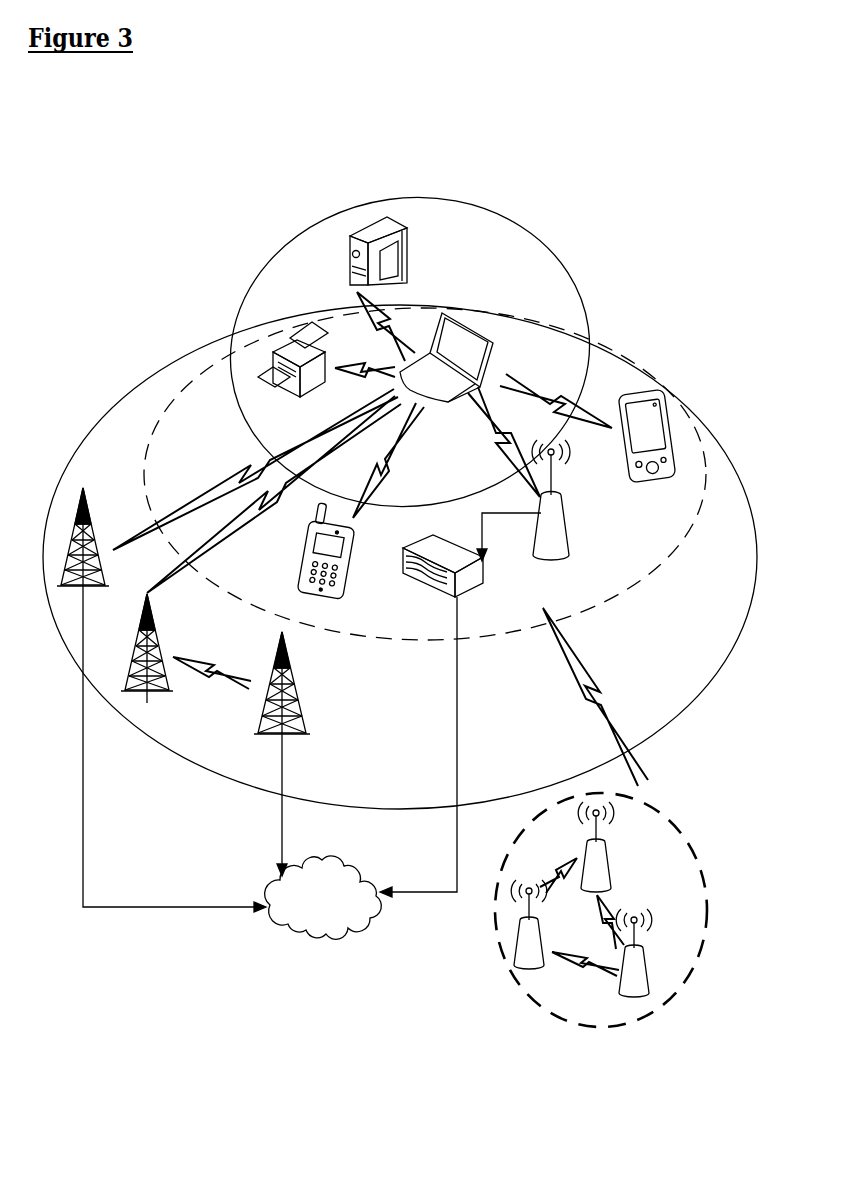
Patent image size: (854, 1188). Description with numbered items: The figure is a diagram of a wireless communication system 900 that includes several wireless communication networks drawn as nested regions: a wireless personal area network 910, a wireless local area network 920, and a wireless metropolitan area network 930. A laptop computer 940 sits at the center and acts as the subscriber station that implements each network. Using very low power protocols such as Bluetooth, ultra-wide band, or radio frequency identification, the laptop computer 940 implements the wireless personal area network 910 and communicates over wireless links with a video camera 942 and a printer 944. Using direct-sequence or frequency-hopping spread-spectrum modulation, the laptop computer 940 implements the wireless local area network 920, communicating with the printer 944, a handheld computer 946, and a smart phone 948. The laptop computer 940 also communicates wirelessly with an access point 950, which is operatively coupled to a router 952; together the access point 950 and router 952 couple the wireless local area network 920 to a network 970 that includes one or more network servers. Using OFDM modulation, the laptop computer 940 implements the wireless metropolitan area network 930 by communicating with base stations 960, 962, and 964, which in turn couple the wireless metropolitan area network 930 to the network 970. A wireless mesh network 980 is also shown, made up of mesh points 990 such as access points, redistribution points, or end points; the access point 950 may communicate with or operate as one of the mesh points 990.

The wireless communication system 900 is at (611, 221).
The wireless personal area network 910 is at (230, 328).
The wireless local area network 920 is at (180, 392).
The wireless metropolitan area network 930 is at (118, 403).
The laptop computer 940 is at (470, 325).
The video camera 942 is at (407, 261).
The printer 944 is at (322, 396).
The handheld computer 946 is at (650, 484).
The smart phone 948 is at (345, 597).
The access point 950 is at (562, 556).
The router 952 is at (466, 594).
The base station 960 is at (86, 486).
The base station 962 is at (163, 655).
The base station 964 is at (302, 714).
The network 970 is at (374, 870).
The wireless mesh network 980 is at (665, 826).
The mesh points 990 is at (638, 891).